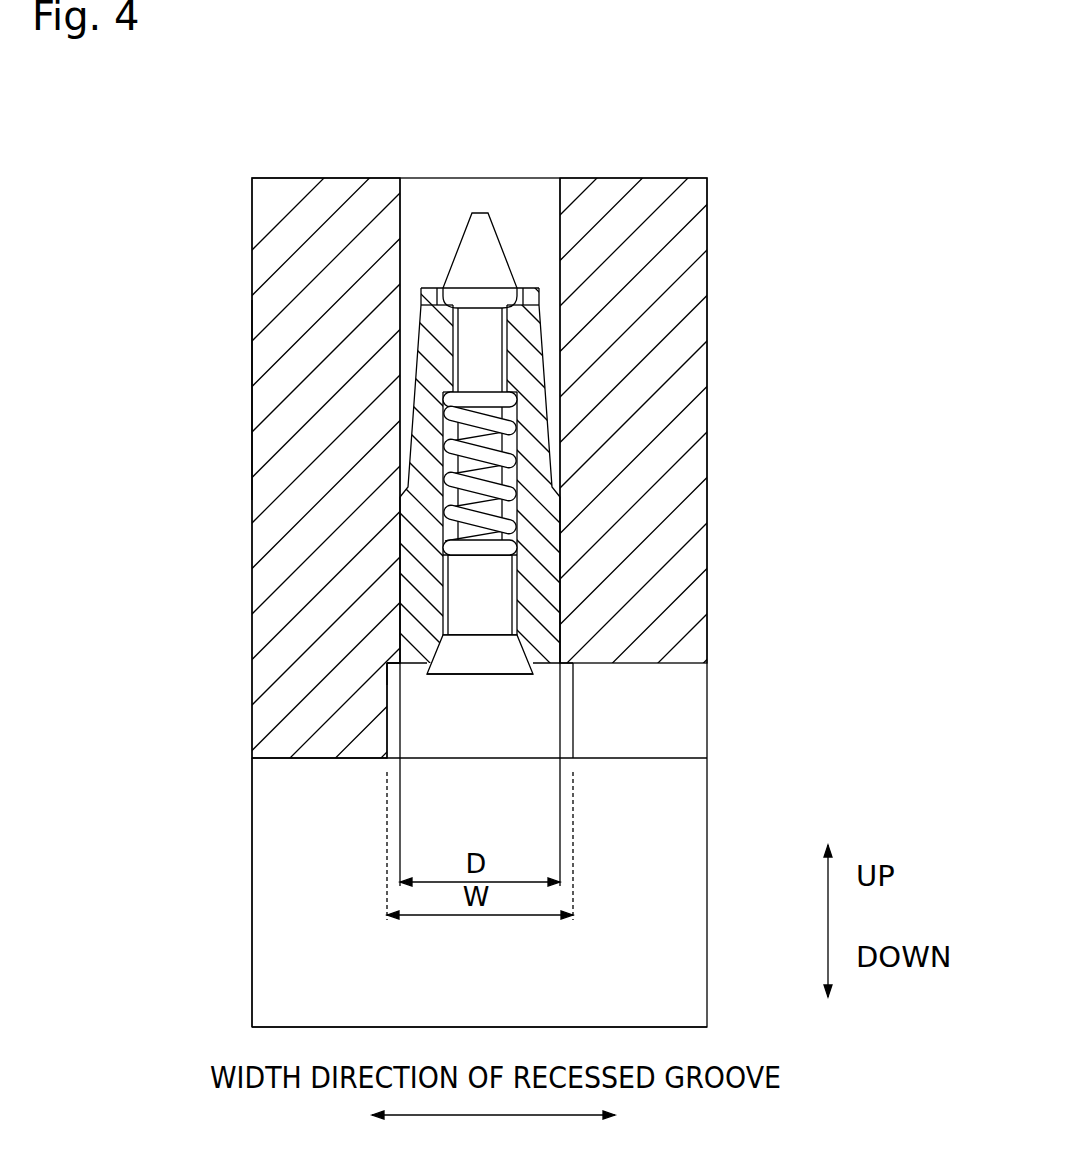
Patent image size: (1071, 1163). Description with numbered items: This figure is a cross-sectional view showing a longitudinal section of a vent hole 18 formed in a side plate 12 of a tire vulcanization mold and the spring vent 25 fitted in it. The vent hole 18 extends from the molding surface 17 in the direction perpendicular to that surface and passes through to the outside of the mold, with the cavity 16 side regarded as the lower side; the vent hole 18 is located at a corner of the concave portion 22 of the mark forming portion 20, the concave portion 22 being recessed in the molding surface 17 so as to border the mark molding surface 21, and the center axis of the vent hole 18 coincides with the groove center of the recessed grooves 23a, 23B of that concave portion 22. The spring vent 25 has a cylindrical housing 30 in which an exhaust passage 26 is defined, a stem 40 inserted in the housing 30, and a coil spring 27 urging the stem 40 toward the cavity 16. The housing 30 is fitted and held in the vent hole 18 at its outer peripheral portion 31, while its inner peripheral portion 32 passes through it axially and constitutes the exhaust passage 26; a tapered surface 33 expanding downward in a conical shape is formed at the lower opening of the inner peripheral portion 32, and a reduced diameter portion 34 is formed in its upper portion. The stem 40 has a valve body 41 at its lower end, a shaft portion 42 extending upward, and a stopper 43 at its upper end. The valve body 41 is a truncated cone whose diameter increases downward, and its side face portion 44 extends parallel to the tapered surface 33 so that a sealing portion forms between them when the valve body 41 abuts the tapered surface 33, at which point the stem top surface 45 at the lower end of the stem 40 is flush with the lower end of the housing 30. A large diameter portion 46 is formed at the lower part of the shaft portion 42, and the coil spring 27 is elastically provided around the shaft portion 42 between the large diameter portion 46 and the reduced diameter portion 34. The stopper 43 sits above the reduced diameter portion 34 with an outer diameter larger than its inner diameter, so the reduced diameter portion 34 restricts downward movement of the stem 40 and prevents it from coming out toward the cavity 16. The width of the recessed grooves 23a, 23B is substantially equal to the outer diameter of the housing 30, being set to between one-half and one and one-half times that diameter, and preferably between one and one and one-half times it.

The side plate 12 is at (323, 227).
The cavity 16 is at (463, 1001).
The molding surface 17 is at (298, 760).
The vent hole 18 is at (413, 224).
The mark forming portion 20 is at (688, 806).
The mark molding surface 21 is at (628, 760).
The concave portion 22 is at (527, 746).
The recessed groove 23B is at (480, 710).
The recessed groove 23a is at (400, 680).
The spring vent 25 is at (375, 476).
The exhaust passage 26 is at (522, 511).
The coil spring 27 is at (533, 430).
The housing 30 is at (478, 425).
The outer peripheral portion 31 is at (400, 537).
The inner peripheral portion 32 is at (437, 560).
The tapered surface 33 is at (528, 643).
The reduced diameter portion 34 is at (441, 330).
The stem 40 is at (514, 428).
The valve body 41 is at (463, 671).
The shaft portion 42 is at (463, 366).
The stopper 43 is at (463, 280).
The side face portion 44 is at (520, 637).
The stem top surface 45 is at (503, 677).
The large diameter portion 46 is at (463, 599).